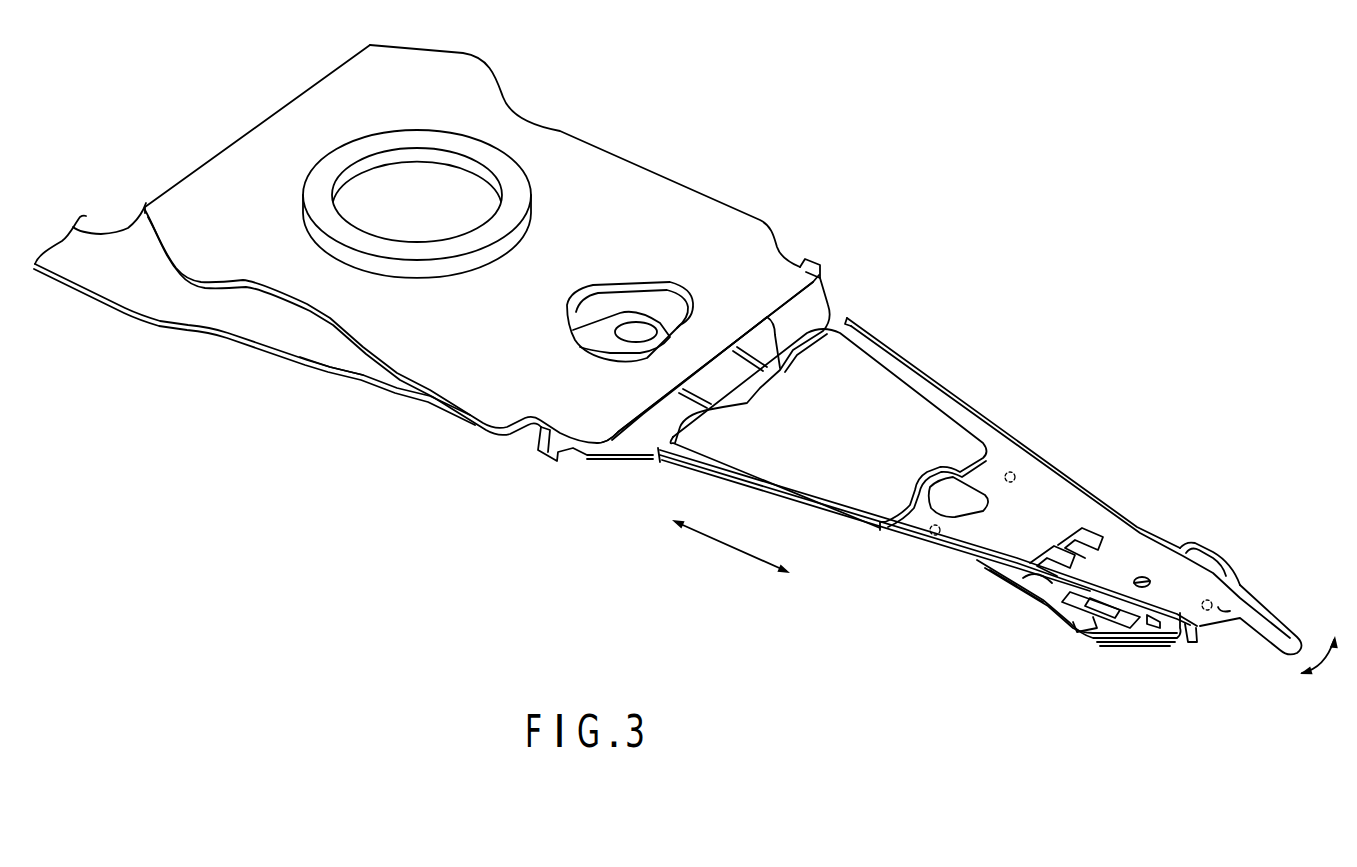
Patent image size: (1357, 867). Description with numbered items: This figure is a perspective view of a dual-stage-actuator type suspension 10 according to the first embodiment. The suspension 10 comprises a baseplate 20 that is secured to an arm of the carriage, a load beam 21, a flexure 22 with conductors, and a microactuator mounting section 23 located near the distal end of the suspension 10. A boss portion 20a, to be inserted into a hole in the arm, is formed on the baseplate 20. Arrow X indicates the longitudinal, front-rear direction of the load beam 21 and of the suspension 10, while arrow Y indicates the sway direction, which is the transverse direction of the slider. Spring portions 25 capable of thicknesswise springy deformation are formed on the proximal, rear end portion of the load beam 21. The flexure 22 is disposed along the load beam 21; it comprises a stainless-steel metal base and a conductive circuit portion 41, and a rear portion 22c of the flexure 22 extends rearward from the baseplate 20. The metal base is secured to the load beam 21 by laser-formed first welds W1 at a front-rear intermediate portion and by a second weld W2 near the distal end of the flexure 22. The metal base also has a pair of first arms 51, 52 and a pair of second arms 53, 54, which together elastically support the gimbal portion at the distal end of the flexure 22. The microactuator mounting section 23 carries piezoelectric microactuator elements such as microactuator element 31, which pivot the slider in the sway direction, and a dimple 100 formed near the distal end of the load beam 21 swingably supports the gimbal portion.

The suspension 10 is at (903, 125).
The baseplate 20 is at (608, 175).
The boss portion 20a is at (498, 167).
The load beam 21 is at (1043, 505).
The flexure 22 is at (1152, 522).
The rear portion of the flexure 22c is at (243, 322).
The microactuator mounting section 23 is at (1052, 640).
The spring portions 25 is at (820, 310).
The microactuator element 31 is at (1120, 617).
The conductive circuit portion 41 is at (330, 368).
The first arm 51 is at (1013, 593).
The first arm 52 is at (1144, 580).
The second arm 53 is at (1153, 643).
The second arm 54 is at (1218, 553).
The dimple 100 is at (1216, 600).
The first weld W1 is at (1010, 472).
The second weld W2 is at (1210, 601).
The arrow X is at (716, 545).
The arrow Y is at (1328, 665).